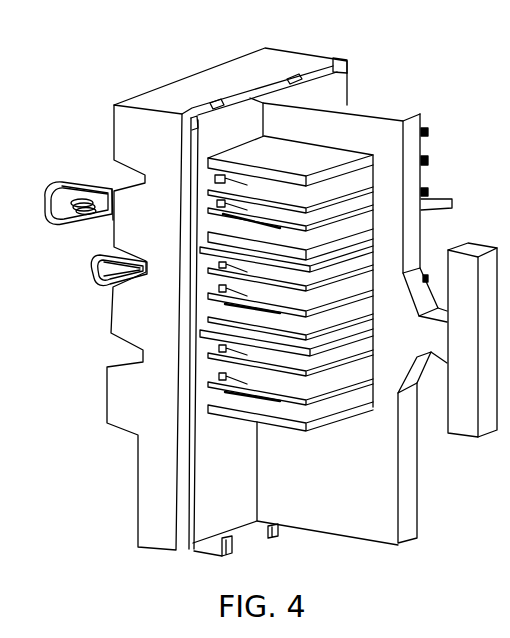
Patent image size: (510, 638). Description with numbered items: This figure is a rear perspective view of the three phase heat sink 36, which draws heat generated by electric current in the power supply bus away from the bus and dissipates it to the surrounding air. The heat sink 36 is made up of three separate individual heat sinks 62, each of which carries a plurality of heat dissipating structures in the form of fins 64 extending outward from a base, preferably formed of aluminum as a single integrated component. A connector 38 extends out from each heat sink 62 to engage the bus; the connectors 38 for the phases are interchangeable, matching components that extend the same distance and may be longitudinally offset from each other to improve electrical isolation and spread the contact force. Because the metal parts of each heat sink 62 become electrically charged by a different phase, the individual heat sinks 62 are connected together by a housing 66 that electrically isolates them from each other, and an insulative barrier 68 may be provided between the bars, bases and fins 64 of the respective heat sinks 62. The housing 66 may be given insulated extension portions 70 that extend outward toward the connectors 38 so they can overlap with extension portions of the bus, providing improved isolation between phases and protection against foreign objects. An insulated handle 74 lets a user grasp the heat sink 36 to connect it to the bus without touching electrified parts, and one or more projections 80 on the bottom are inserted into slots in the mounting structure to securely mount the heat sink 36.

The three phase heat sink 36 is at (363, 58).
The connector 38 is at (72, 185).
The heat sink 62 is at (377, 190).
The fins 64 is at (307, 161).
The housing 66 is at (403, 120).
The insulative barrier 68 is at (308, 250).
The insulated extension portions 70 is at (126, 131).
The insulated handle 74 is at (460, 417).
The projections 80 is at (232, 547).